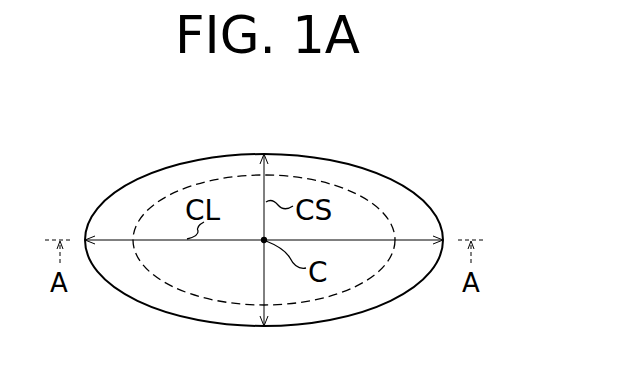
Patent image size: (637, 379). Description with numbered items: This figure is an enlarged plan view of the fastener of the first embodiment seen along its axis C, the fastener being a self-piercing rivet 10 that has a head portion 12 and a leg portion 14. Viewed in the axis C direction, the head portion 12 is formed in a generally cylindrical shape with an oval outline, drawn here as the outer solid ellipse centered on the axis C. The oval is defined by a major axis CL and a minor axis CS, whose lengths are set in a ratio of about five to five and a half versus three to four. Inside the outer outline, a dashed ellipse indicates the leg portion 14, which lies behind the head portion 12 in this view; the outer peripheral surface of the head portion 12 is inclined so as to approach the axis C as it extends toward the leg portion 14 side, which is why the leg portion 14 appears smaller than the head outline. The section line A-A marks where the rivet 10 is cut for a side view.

The self-piercing rivet 10 is at (297, 210).
The head portion 12 is at (392, 178).
The leg portion 14 is at (387, 222).